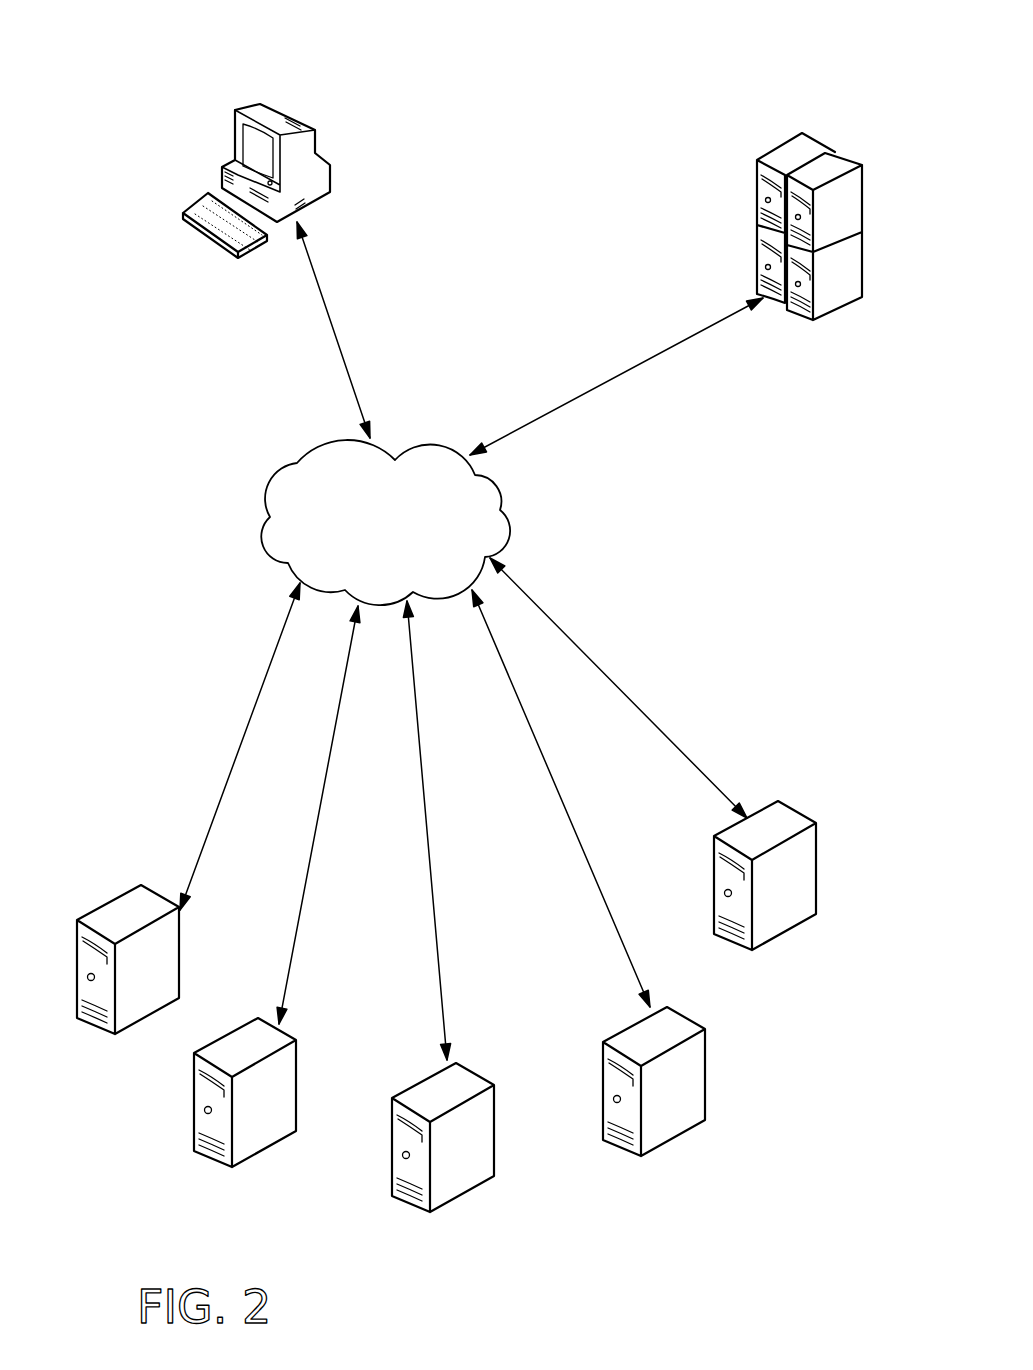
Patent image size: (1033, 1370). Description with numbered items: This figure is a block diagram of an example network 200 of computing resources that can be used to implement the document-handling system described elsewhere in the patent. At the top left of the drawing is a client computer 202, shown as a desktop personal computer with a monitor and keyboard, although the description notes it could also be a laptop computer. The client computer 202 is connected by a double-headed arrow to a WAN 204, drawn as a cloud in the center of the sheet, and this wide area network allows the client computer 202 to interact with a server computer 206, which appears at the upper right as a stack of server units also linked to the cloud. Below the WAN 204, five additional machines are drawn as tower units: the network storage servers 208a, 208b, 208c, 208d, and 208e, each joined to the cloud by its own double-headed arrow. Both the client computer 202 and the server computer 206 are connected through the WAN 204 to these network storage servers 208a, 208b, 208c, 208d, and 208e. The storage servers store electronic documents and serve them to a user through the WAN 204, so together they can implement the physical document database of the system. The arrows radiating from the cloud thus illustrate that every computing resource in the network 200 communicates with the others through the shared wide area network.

The network 200 is at (568, 148).
The client computer 202 is at (226, 166).
The WAN 204 is at (297, 462).
The server computer 206 is at (779, 146).
The network storage server 208a is at (166, 1008).
The network storage server 208b is at (260, 1157).
The network storage server 208c is at (497, 1151).
The network storage server 208d is at (703, 1063).
The network storage server 208e is at (772, 800).